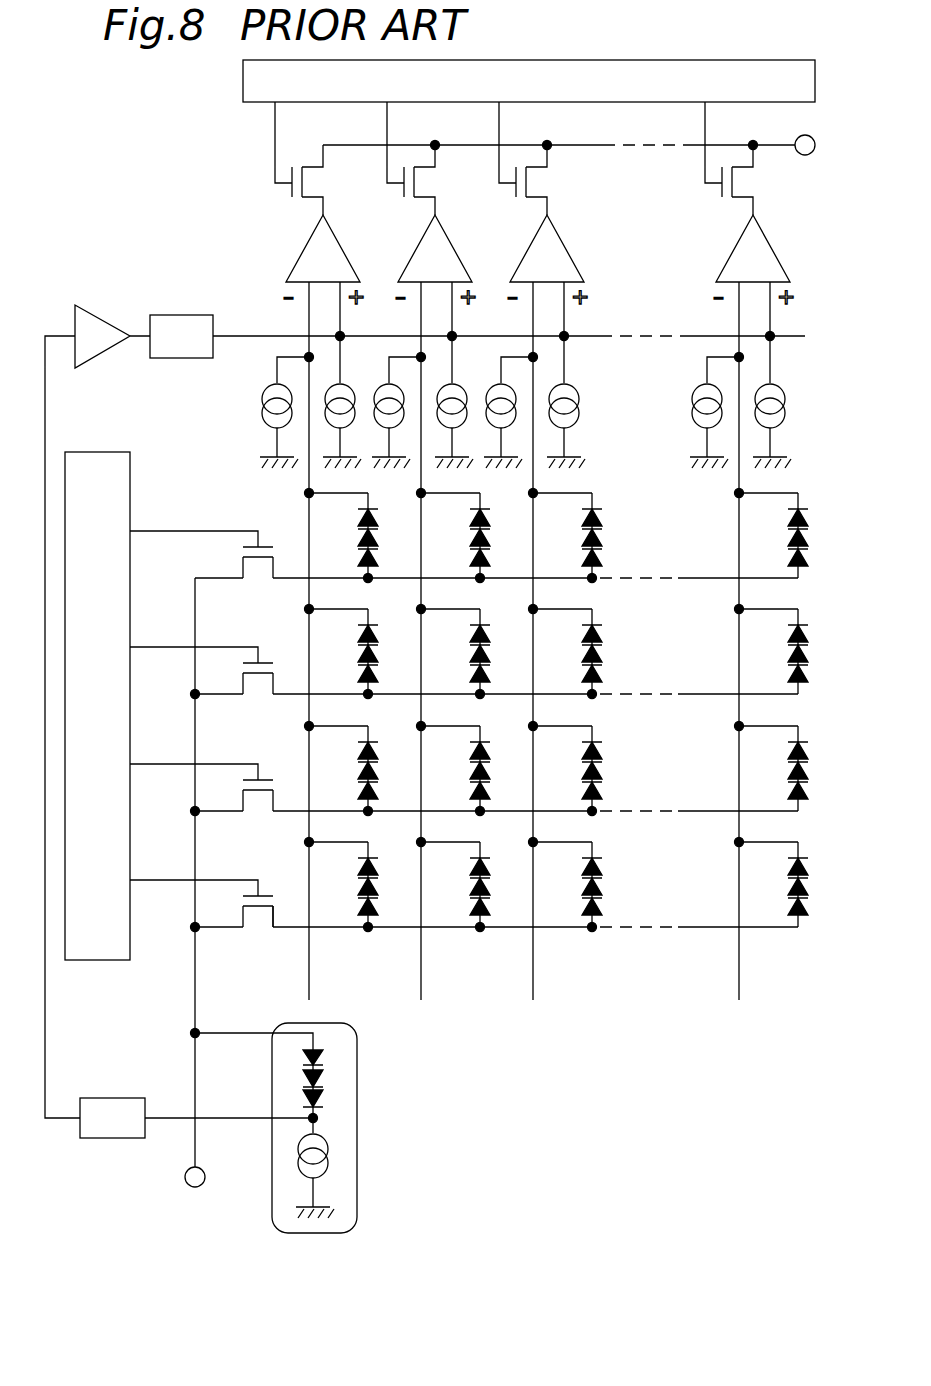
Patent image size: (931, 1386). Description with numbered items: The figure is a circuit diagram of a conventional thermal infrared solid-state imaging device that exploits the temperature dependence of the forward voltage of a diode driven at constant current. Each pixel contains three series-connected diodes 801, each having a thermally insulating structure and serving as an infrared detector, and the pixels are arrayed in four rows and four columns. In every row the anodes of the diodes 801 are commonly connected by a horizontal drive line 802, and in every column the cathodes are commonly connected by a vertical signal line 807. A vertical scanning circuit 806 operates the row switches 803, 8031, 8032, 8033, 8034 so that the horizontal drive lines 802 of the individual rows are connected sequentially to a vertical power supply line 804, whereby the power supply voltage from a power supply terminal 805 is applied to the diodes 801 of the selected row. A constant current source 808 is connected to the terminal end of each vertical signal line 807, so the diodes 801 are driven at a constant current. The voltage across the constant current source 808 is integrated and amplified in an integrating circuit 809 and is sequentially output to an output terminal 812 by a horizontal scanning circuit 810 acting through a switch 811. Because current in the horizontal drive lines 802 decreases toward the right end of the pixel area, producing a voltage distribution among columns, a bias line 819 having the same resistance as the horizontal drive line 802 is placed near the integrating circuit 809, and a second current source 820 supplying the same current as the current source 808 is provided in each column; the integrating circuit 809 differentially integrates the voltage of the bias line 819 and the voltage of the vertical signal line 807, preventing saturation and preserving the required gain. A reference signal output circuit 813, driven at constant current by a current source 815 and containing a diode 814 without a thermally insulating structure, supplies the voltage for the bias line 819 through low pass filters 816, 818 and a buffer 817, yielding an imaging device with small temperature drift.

The diode 801 is at (808, 545).
The horizontal drive line 802 is at (706, 578).
The switch 803 is at (255, 917).
The vertical power supply line 804 is at (190, 718).
The power supply terminal 805 is at (185, 1178).
The vertical scanning circuit 806 is at (102, 962).
The vertical signal line 807 is at (737, 626).
The constant current source 808 is at (692, 445).
The integrating circuit 809 is at (294, 265).
The horizontal scanning circuit 810 is at (243, 76).
The switch 811 is at (292, 185).
The output terminal 812 is at (805, 156).
The reference signal output circuit 813 is at (357, 1052).
The diode 814 is at (323, 1080).
The current source 815 is at (329, 1162).
The low pass filter 816 is at (103, 1140).
The buffer 817 is at (93, 310).
The low pass filter 818 is at (182, 315).
The bias line 819 is at (243, 336).
The second current source 820 is at (327, 430).
The switch 8031 is at (228, 880).
The switch 8032 is at (213, 764).
The switch 8033 is at (208, 647).
The switch 8034 is at (208, 531).